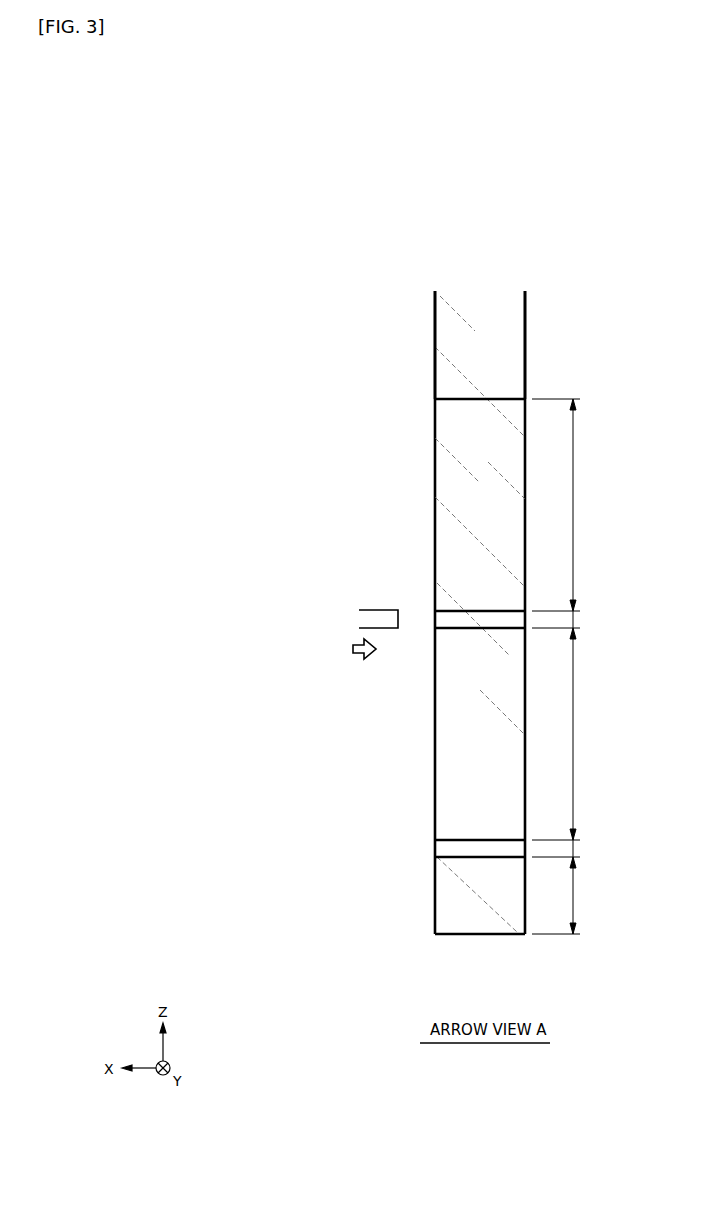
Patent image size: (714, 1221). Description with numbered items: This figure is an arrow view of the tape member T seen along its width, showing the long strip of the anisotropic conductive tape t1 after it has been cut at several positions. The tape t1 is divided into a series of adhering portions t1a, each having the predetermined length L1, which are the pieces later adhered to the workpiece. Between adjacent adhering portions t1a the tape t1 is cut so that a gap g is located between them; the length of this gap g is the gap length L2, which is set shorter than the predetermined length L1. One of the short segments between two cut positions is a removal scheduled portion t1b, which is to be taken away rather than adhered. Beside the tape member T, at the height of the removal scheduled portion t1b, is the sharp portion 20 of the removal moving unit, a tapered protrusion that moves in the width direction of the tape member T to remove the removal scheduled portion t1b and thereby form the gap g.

The tape member T is at (528, 297).
The anisotropic conductive tape t1 is at (480, 312).
The adhering portion t1a is at (436, 462).
The removal scheduled portion t1b is at (448, 619).
The gap g is at (437, 848).
The sharp portion 20 is at (381, 612).
The predetermined length L1 is at (566, 666).
The gap length L2 is at (566, 734).